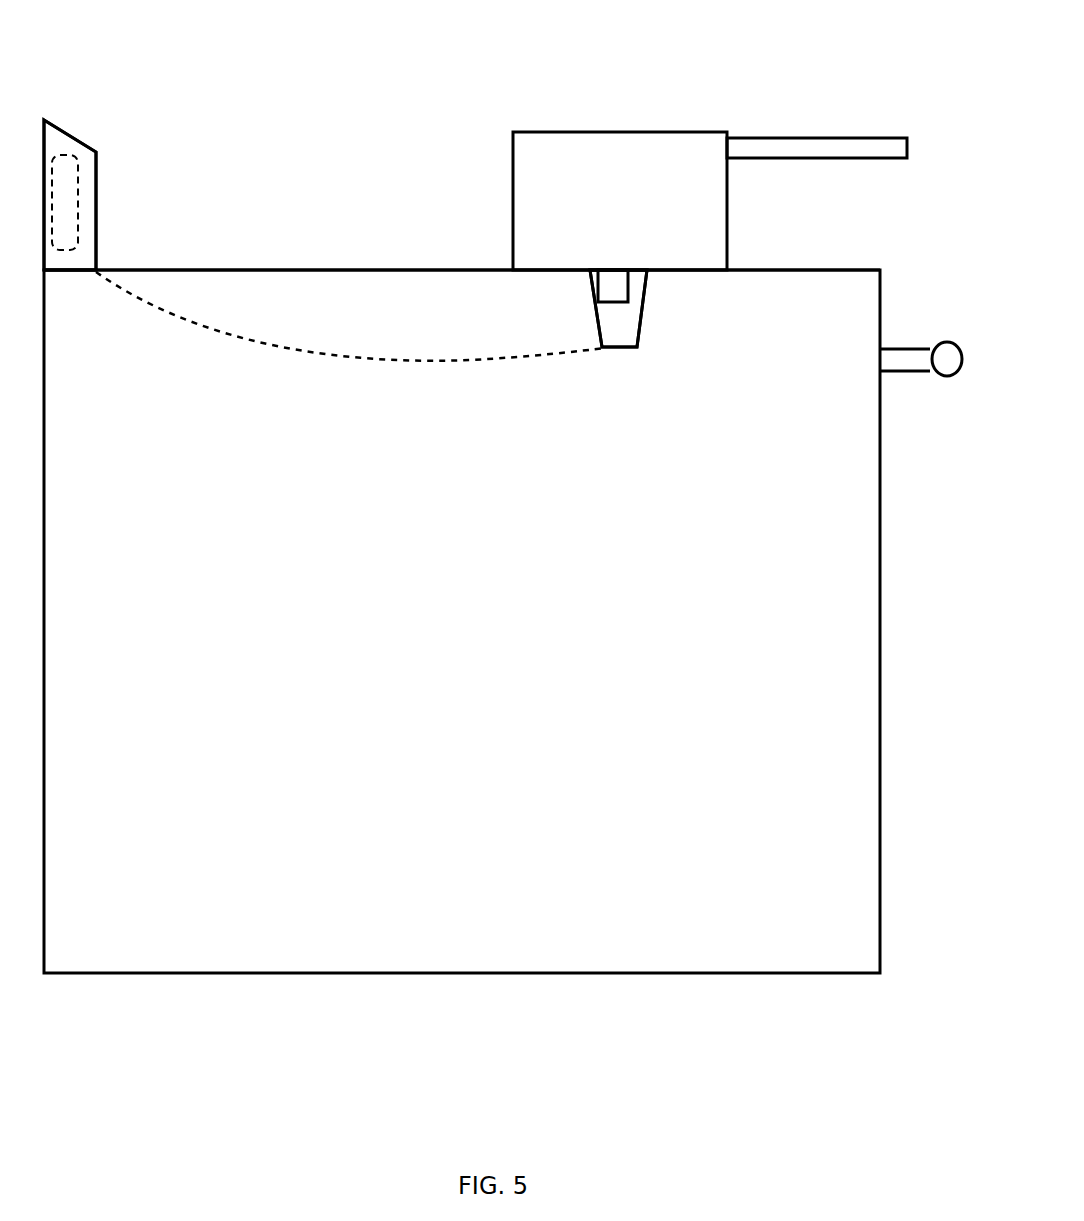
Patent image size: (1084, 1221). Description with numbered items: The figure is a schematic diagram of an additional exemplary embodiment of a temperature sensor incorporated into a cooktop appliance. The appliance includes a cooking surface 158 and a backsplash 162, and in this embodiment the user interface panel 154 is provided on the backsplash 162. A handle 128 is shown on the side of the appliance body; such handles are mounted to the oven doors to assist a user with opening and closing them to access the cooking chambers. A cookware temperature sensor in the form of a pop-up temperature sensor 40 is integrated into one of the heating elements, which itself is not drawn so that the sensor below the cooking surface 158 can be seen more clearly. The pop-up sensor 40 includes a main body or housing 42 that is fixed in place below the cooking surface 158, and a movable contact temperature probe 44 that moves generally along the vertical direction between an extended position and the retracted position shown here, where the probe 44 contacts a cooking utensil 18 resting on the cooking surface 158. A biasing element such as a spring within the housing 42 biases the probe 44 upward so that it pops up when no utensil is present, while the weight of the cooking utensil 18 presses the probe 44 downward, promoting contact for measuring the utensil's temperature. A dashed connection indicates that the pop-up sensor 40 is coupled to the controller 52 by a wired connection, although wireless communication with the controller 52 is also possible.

The cooking utensil 18 is at (608, 143).
The pop-up temperature sensor 40 is at (642, 368).
The housing 42 is at (644, 320).
The movable contact temperature probe 44 is at (596, 290).
The controller 52 is at (78, 228).
The handle 128 is at (945, 338).
The user interface panel 154 is at (106, 178).
The cooking surface 158 is at (397, 262).
The backsplash 162 is at (70, 138).